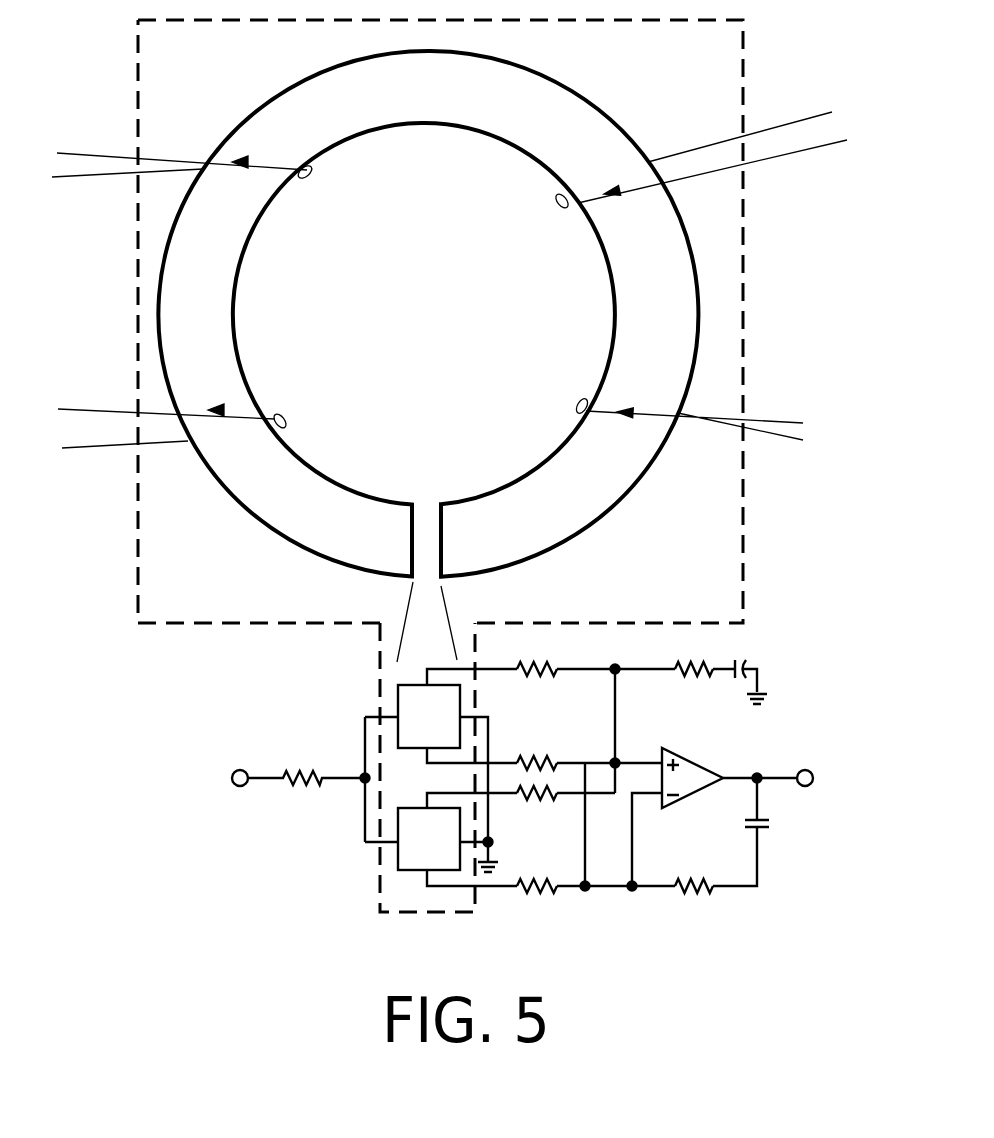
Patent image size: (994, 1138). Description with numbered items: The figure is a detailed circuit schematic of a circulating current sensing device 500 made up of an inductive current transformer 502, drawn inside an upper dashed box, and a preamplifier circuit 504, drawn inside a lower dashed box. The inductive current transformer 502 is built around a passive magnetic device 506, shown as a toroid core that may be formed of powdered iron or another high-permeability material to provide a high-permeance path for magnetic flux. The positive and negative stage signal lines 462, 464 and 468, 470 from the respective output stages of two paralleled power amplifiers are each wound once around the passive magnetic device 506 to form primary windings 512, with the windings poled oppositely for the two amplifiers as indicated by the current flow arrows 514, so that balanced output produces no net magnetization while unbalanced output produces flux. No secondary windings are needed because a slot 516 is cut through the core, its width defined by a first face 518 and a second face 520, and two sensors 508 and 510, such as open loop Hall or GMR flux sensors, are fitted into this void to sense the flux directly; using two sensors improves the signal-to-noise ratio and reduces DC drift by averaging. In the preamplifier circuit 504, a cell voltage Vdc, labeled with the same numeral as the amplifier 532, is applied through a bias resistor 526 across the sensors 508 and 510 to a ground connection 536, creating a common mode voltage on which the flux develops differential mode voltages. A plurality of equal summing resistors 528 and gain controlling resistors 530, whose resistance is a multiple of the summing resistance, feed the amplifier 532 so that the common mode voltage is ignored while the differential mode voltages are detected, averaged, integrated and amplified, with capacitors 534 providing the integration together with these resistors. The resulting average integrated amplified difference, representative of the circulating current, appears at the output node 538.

The circulating current sensing device 500 is at (764, 48).
The inductive current transformer 502 is at (132, 22).
The preamplifier circuit 504 is at (769, 614).
The passive magnetic device 506 is at (522, 68).
The sensor 508 is at (398, 690).
The sensor 510 is at (398, 865).
The primary windings 512 is at (310, 178).
The current flow arrows 514 is at (240, 158).
The slot 516 is at (436, 449).
The first face 518 is at (413, 536).
The second face 520 is at (440, 544).
The bias resistor 526 is at (298, 762).
The summing resistors 528 is at (548, 647).
The gain controlling resistors 530 is at (700, 679).
The amplifier 532 is at (210, 760).
The capacitors 534 is at (746, 667).
The ground connection 536 is at (490, 876).
The output node 538 is at (812, 770).
The positive stage signal line 462 is at (118, 153).
The negative stage signal line 464 is at (118, 409).
The positive stage signal line 468 is at (797, 121).
The negative stage signal line 470 is at (750, 420).